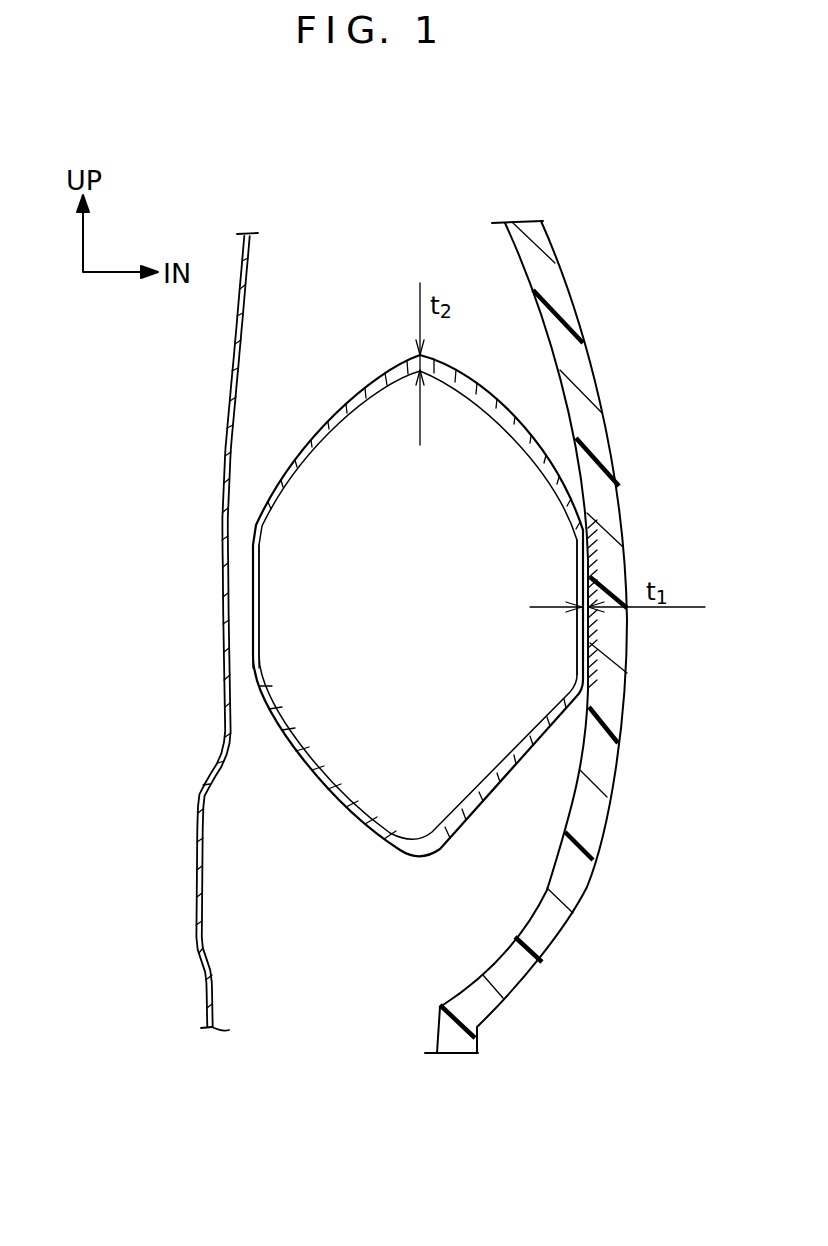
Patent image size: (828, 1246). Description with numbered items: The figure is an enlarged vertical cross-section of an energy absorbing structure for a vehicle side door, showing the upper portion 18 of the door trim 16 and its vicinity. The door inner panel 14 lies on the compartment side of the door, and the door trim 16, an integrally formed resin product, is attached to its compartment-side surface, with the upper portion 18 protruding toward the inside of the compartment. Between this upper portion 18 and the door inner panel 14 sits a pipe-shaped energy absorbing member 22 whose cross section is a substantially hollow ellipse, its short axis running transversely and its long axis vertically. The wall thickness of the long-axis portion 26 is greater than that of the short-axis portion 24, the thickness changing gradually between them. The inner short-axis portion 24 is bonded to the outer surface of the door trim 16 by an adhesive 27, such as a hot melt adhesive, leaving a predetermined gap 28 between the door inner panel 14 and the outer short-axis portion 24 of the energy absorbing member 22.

The door inner panel 14 is at (224, 452).
The door trim 16 is at (597, 378).
The upper portion 18 is at (596, 436).
The energy absorbing member 22 is at (416, 605).
The short-axis portion 24 is at (262, 638).
The long-axis portion 26 is at (449, 376).
The adhesive 27 is at (594, 560).
The gap 28 is at (228, 590).